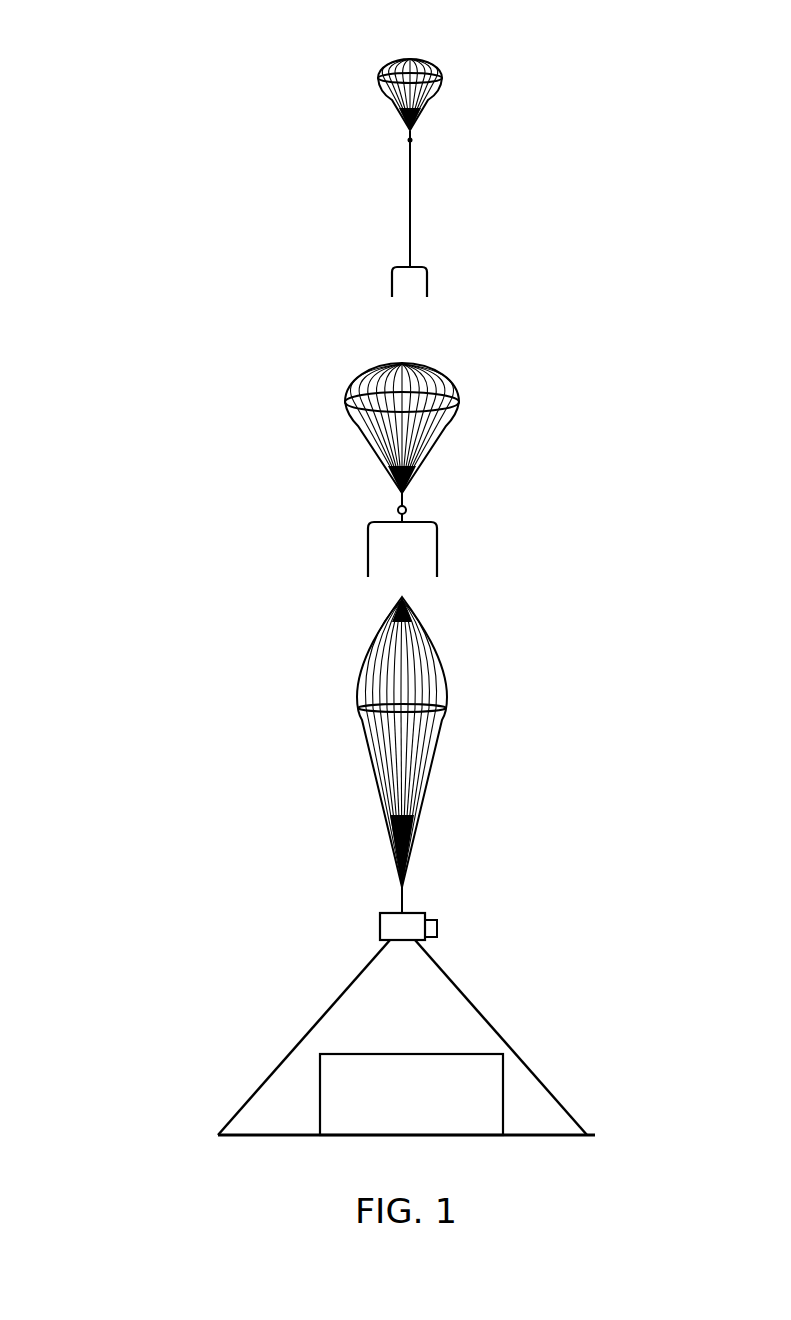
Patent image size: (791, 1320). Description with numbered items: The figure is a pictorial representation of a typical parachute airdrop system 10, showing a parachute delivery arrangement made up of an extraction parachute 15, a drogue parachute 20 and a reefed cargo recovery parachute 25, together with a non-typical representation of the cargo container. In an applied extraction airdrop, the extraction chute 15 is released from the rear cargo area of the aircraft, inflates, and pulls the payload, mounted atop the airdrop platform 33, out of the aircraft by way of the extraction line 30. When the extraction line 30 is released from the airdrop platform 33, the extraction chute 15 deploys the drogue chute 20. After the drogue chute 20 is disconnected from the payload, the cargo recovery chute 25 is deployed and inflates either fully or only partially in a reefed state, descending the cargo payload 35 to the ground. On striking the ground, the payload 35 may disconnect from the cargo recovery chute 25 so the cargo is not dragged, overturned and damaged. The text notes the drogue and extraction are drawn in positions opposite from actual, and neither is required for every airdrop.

The parachute airdrop system 10 is at (100, 264).
The extraction parachute 15 is at (442, 82).
The drogue parachute 20 is at (458, 385).
The cargo recovery parachute 25 is at (442, 675).
The extraction line 30 is at (412, 225).
The airdrop platform 33 is at (597, 1135).
The cargo payload 35 is at (363, 1054).